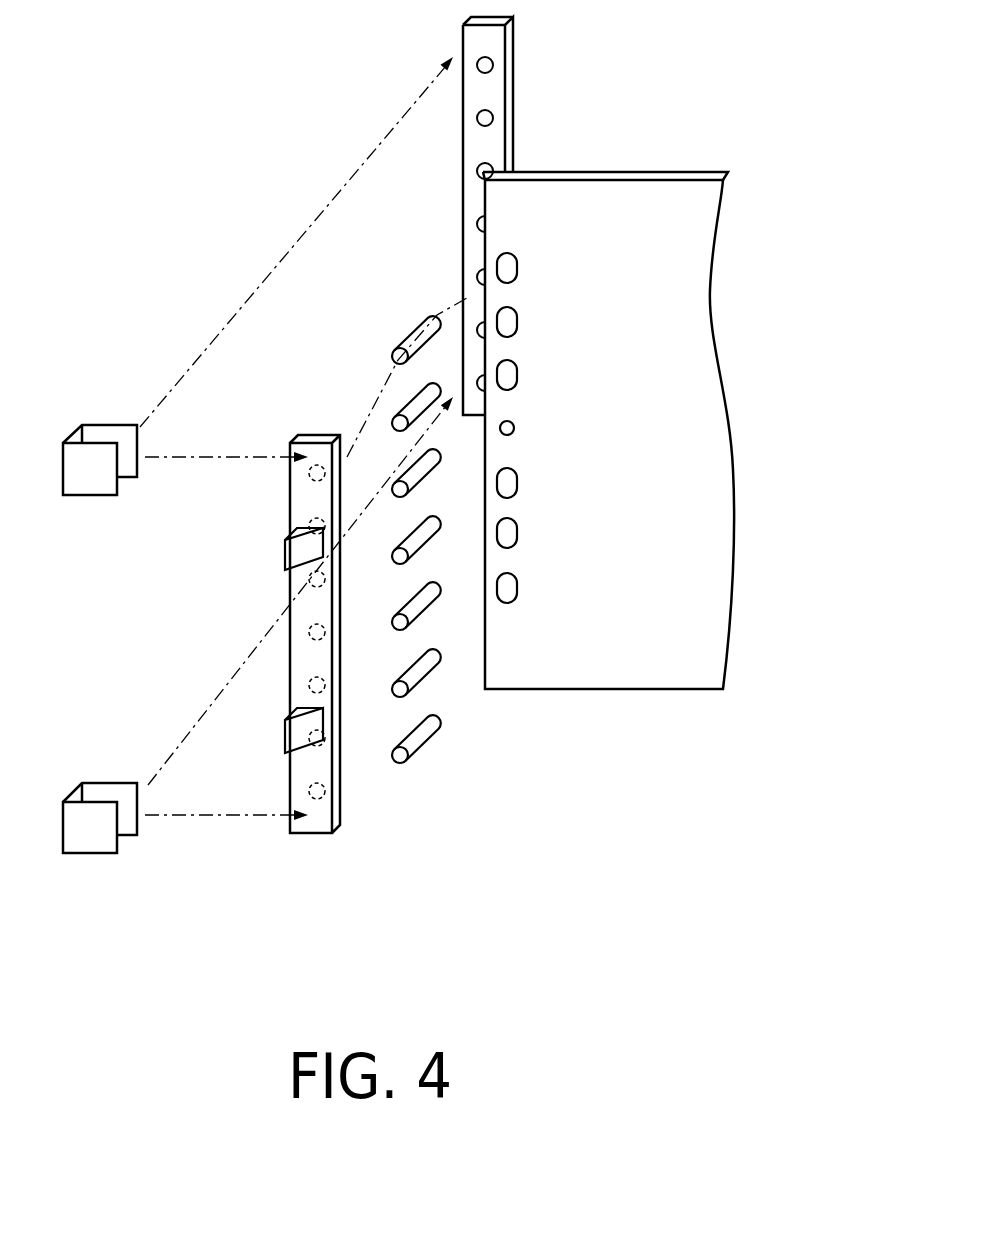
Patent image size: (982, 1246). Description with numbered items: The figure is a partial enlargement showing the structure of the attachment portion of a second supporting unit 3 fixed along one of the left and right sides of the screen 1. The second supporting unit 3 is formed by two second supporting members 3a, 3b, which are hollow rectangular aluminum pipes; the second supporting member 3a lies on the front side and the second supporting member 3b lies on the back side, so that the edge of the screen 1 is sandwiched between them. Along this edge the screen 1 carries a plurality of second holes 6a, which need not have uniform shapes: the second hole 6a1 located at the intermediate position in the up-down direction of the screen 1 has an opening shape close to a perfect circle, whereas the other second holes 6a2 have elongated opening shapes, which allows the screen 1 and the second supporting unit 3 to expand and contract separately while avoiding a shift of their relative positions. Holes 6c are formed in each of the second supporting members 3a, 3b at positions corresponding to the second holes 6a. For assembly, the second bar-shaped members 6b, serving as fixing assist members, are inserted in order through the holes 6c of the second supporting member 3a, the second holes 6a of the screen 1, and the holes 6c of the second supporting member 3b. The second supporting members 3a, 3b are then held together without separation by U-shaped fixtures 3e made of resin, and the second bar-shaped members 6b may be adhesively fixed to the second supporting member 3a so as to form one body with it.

The screen 1 is at (675, 198).
The second supporting unit 3 is at (293, 278).
The second supporting member 3a is at (463, 273).
The second supporting member 3b is at (318, 435).
The U-shaped fixture 3e is at (90, 480).
The second hole 6a is at (625, 293).
The second hole 6a1 is at (514, 428).
The second hole 6a2 is at (517, 268).
The second bar-shaped member 6b is at (384, 537).
The hole 6c is at (402, 422).